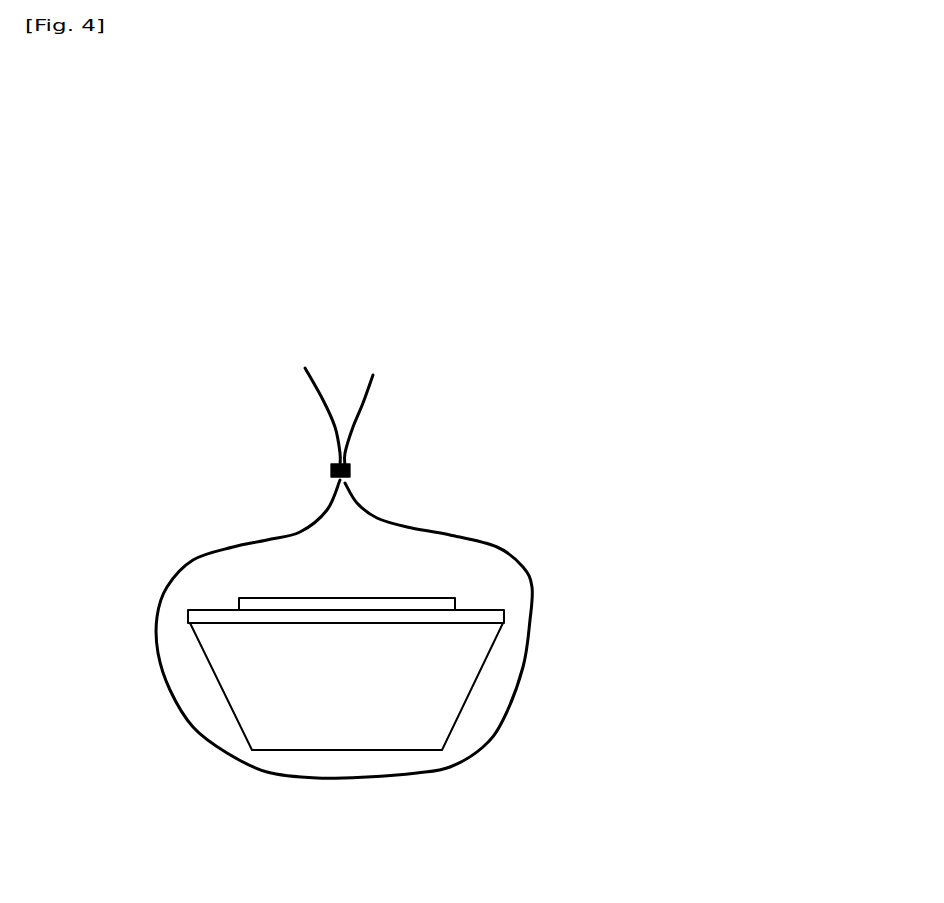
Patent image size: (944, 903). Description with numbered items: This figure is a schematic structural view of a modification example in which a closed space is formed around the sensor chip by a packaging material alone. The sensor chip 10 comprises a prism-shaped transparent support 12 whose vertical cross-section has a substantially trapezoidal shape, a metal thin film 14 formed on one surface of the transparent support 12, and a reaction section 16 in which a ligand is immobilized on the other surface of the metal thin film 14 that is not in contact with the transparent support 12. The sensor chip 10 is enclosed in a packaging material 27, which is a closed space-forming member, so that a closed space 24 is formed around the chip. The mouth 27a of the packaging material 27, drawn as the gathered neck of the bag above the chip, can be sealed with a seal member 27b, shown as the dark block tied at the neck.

The sensor chip 10 is at (503, 210).
The transparent support 12 is at (390, 703).
The metal thin film 14 is at (472, 618).
The reaction section 16 is at (345, 603).
The closed space 24 is at (250, 568).
The packaging material 27 is at (263, 540).
The mouth 27a is at (303, 408).
The seal member 27b is at (350, 463).